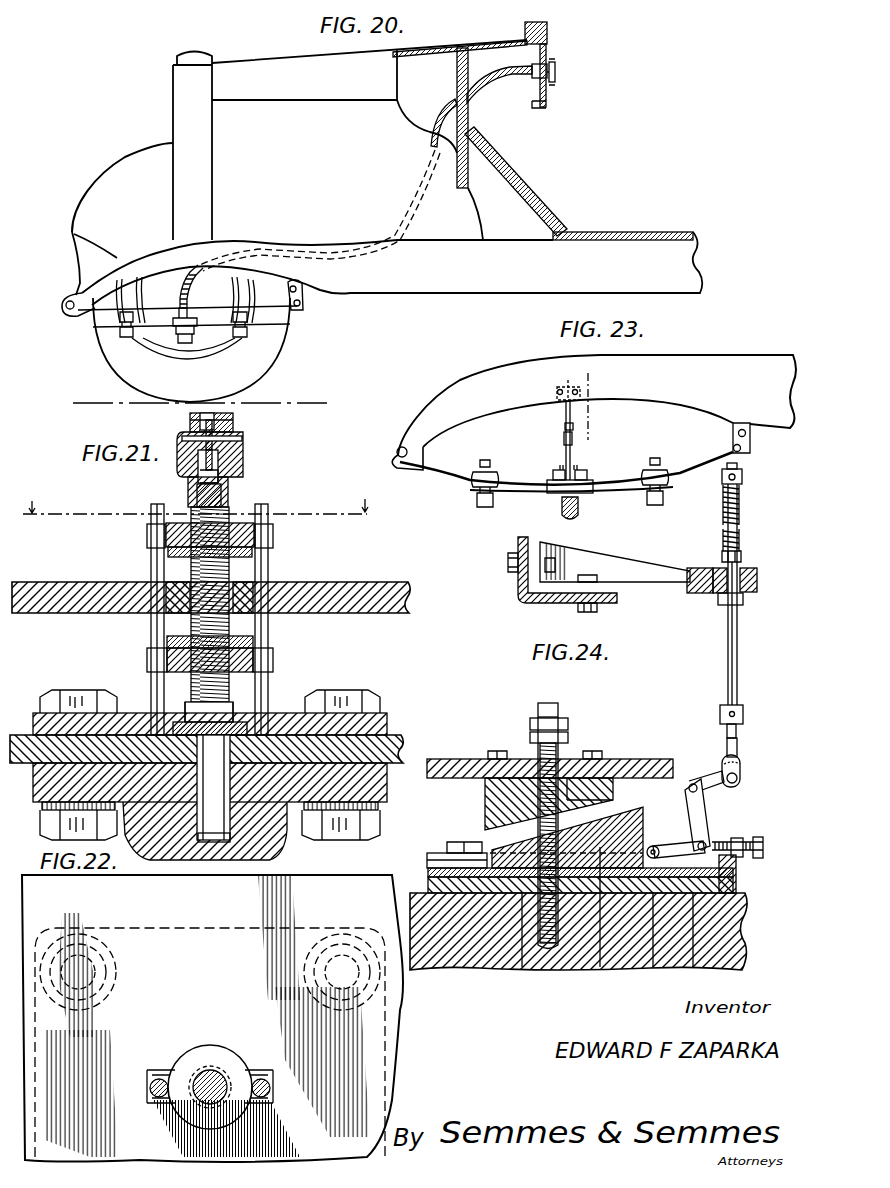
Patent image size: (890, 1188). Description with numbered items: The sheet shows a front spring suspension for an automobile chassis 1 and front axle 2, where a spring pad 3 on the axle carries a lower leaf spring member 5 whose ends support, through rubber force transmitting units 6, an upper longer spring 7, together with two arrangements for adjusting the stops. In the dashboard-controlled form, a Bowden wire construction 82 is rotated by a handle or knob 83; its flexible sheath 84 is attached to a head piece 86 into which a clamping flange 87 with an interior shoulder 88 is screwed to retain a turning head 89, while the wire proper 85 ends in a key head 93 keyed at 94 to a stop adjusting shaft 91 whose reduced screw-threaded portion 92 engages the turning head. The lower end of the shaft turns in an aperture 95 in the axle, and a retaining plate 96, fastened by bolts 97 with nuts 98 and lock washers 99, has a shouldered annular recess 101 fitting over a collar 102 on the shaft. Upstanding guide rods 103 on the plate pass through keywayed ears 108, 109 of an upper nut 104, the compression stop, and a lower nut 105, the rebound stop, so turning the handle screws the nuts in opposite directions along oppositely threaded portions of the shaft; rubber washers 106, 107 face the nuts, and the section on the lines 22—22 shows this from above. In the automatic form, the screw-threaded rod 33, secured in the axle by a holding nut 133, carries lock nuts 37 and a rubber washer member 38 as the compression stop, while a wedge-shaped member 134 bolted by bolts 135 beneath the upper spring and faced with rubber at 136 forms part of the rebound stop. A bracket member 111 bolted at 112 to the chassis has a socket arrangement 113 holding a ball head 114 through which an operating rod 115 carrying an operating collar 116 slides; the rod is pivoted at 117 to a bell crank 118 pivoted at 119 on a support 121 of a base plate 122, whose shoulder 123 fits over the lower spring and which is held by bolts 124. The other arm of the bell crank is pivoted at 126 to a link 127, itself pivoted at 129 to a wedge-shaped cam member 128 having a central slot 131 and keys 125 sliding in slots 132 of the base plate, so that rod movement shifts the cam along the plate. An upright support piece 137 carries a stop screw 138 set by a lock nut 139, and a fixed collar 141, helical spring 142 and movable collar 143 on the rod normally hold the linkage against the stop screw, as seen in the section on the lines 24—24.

In FIG. 20, the automobile chassis 1 is at (466, 286).
In FIG. 23, the automobile chassis 1 is at (723, 360).
In FIG. 20, the front axle 2 is at (187, 343).
In FIG. 21, the front axle 2 is at (288, 845).
In FIG. 23, the front axle 2 is at (575, 520).
In FIG. 24, the front axle 2 is at (740, 941).
In FIG. 21, the spring pad 3 is at (387, 775).
In FIG. 20, the leaf spring member 5 is at (227, 332).
In FIG. 21, the leaf spring member 5 is at (403, 740).
In FIG. 23, the leaf spring member 5 is at (523, 492).
In FIG. 24, the leaf spring member 5 is at (653, 966).
In FIG. 20, the rubber force transmitting units 6 is at (113, 323).
In FIG. 23, the rubber force transmitting units 6 is at (475, 482).
In FIG. 20, the upper longer spring 7 is at (297, 312).
In FIG. 21, the upper longer spring 7 is at (392, 582).
In FIG. 22, the upper longer spring 7 is at (400, 1003).
In FIG. 23, the upper longer spring 7 is at (700, 466).
In FIG. 24, the upper longer spring 7 is at (650, 759).
In FIG. 21, the section line 22 is at (198, 499).
In FIG. 23, the section line 24 is at (594, 386).
In FIG. 23, the screw-threaded rod 33 is at (566, 430).
In FIG. 24, the screw-threaded rod 33 is at (552, 703).
In FIG. 24, the lock nuts 37 is at (530, 726).
In FIG. 24, the rubber washer member 38 is at (530, 737).
In FIG. 20, the Bowden wire construction 82 is at (503, 82).
In FIG. 20, the handle or knob 83 is at (557, 70).
In FIG. 21, the flexible sheath 84 is at (222, 416).
In FIG. 21, the wire proper 85 is at (228, 430).
In FIG. 21, the head piece 86 is at (190, 423).
In FIG. 21, the clamping flange 87 is at (177, 462).
In FIG. 21, the interior shoulder 88 is at (198, 478).
In FIG. 21, the turning head 89 is at (200, 479).
In FIG. 21, the stop adjusting shaft 91 is at (225, 825).
In FIG. 22, the stop adjusting shaft 91 is at (210, 1070).
In FIG. 21, the reduced screw-threaded portion 92 is at (230, 492).
In FIG. 21, the key head 93 is at (243, 452).
In FIG. 21, the key 94 is at (235, 470).
In FIG. 21, the aperture 95 is at (217, 838).
In FIG. 21, the retaining plate 96 is at (387, 713).
In FIG. 22, the retaining plate 96 is at (182, 928).
In FIG. 21, the bolts 97 is at (76, 692).
In FIG. 22, the bolts 97 is at (115, 958).
In FIG. 21, the nuts 98 is at (40, 836).
In FIG. 21, the lock washers 99 is at (42, 806).
In FIG. 22, the lock washers 99 is at (118, 980).
In FIG. 21, the shouldered annular recess 101 is at (265, 715).
In FIG. 21, the collar 102 is at (180, 728).
In FIG. 21, the upstanding guide rods 103 is at (151, 565).
In FIG. 22, the upstanding guide rods 103 is at (150, 1087).
In FIG. 21, the upper nut 104 is at (255, 536).
In FIG. 22, the upper nut 104 is at (190, 1057).
In FIG. 21, the lower nut 105 is at (253, 662).
In FIG. 21, the rubber washer 106 is at (253, 552).
In FIG. 21, the rubber washer 107 is at (250, 640).
In FIG. 21, the keywayed ears 108 is at (147, 537).
In FIG. 22, the keywayed ears 108 is at (152, 1070).
In FIG. 21, the keywayed ears 109 is at (147, 650).
In FIG. 23, the bracket member 111 is at (557, 395).
In FIG. 23, the bolts 112 is at (508, 560).
In FIG. 23, the socket arrangement 113 is at (745, 568).
In FIG. 23, the ball head 114 is at (745, 545).
In FIG. 23, the operating rod 115 is at (563, 407).
In FIG. 24, the operating rod 115 is at (737, 635).
In FIG. 23, the operating collar 116 is at (573, 427).
In FIG. 24, the operating collar 116 is at (744, 712).
In FIG. 24, the pivot 117 is at (742, 768).
In FIG. 24, the bell crank 118 is at (718, 790).
In FIG. 24, the pivot 119 is at (695, 779).
In FIG. 24, the support 121 is at (683, 846).
In FIG. 23, the base plate 122 is at (593, 485).
In FIG. 24, the base plate 122 is at (722, 870).
In FIG. 24, the shoulder 123 is at (670, 891).
In FIG. 23, the bolts 124 is at (553, 480).
In FIG. 24, the bolts 124 is at (460, 842).
In FIG. 23, the keys 125 is at (558, 475).
In FIG. 24, the pivot 126 is at (710, 845).
In FIG. 24, the link 127 is at (693, 967).
In FIG. 23, the wedge-shaped cam member 128 is at (562, 505).
In FIG. 24, the wedge-shaped cam member 128 is at (633, 817).
In FIG. 24, the pivot point 129 is at (656, 845).
In FIG. 24, the central slot 131 is at (600, 967).
In FIG. 24, the slots 132 is at (427, 860).
In FIG. 24, the holding nut 133 is at (522, 967).
In FIG. 23, the wedge-shaped member 134 is at (575, 440).
In FIG. 24, the wedge-shaped member 134 is at (485, 791).
In FIG. 24, the bolts 135 is at (492, 751).
In FIG. 24, the rubber facing 136 is at (618, 775).
In FIG. 24, the upright support piece 137 is at (740, 860).
In FIG. 24, the stop screw 138 is at (759, 838).
In FIG. 24, the lock nut 139 is at (737, 838).
In FIG. 23, the fixed collar 141 is at (742, 471).
In FIG. 23, the helical spring 142 is at (740, 500).
In FIG. 23, the movable collar 143 is at (722, 548).